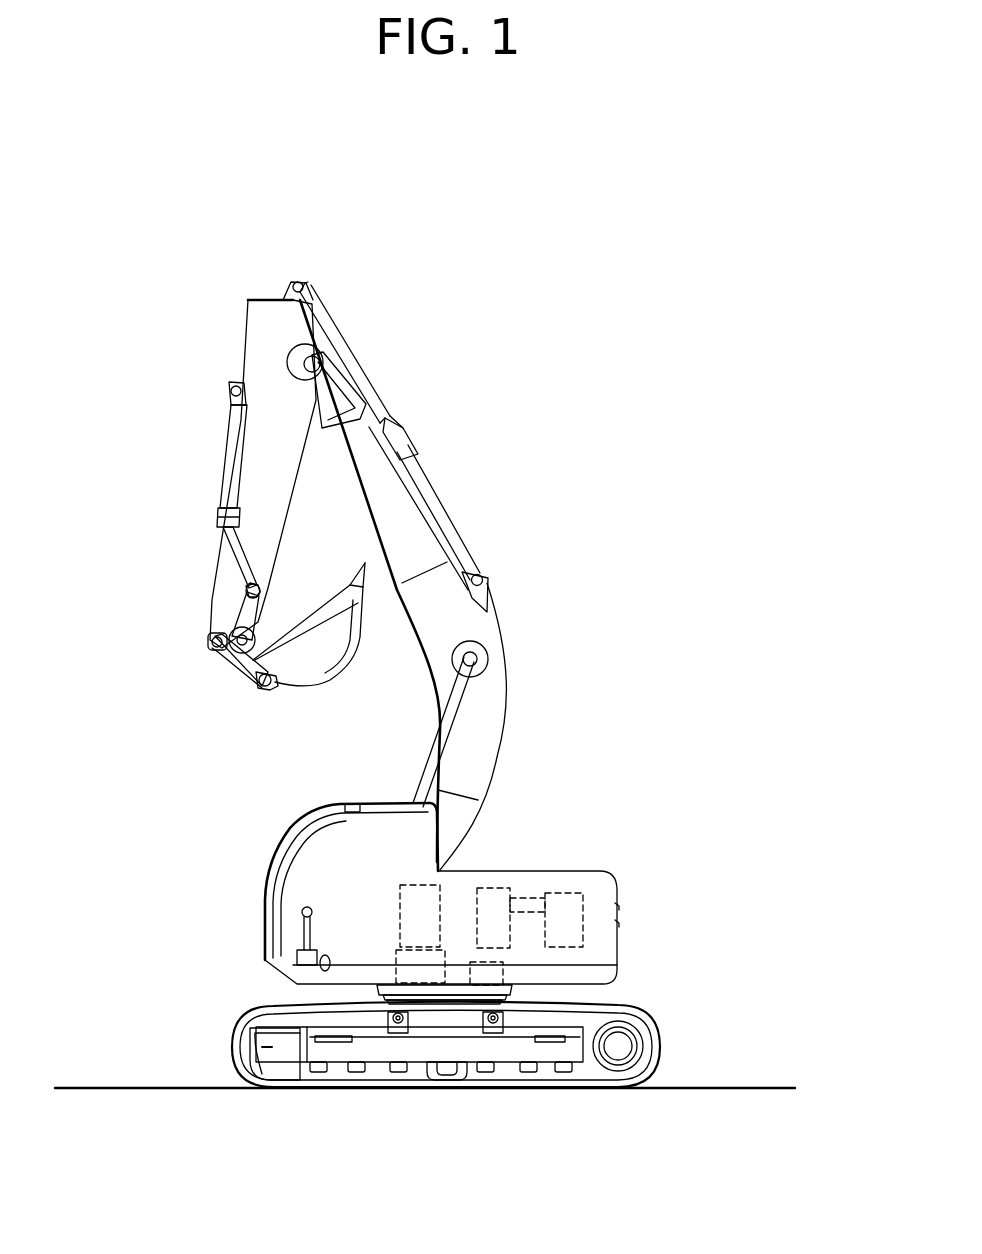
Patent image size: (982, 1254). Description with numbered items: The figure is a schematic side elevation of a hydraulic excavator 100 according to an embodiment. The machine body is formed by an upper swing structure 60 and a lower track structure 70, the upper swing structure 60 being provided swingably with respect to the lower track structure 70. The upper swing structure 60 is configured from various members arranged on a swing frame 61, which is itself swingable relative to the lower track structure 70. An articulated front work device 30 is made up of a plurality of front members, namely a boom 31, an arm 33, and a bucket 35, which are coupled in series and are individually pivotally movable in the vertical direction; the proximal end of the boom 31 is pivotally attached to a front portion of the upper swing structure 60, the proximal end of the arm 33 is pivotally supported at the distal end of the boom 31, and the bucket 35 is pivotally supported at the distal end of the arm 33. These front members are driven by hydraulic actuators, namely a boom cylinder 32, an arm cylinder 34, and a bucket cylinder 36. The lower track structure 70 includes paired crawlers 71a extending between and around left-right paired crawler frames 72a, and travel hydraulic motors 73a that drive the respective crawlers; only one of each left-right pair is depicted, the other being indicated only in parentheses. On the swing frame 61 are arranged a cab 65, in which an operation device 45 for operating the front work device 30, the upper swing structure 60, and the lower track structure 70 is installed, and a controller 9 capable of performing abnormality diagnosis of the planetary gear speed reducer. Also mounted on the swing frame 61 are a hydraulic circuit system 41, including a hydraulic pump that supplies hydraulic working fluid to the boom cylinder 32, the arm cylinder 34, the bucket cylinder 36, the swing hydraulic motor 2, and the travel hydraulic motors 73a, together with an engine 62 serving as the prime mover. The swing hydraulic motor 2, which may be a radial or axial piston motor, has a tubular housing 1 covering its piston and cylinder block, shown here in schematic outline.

The hydraulic excavator 100 is at (612, 618).
The front work device 30 is at (430, 393).
The boom 31 is at (500, 690).
The boom cylinder 32 is at (428, 752).
The arm 33 is at (262, 315).
The arm cylinder 34 is at (426, 487).
The bucket 35 is at (304, 682).
The bucket cylinder 36 is at (233, 452).
The upper swing structure 60 is at (268, 828).
The swing frame 61 is at (610, 976).
The cab 65 is at (297, 884).
The operation device 45 is at (300, 914).
The housing 1 is at (395, 958).
The swing hydraulic motor 2 is at (396, 917).
The hydraulic circuit system 41 is at (495, 886).
The engine 62 is at (576, 891).
The lower track structure 70 is at (228, 1040).
The crawler 71a is at (622, 1045).
The crawler frame 72a is at (416, 1050).
The travel hydraulic motor 73a is at (618, 1046).
The controller 9 is at (492, 1040).